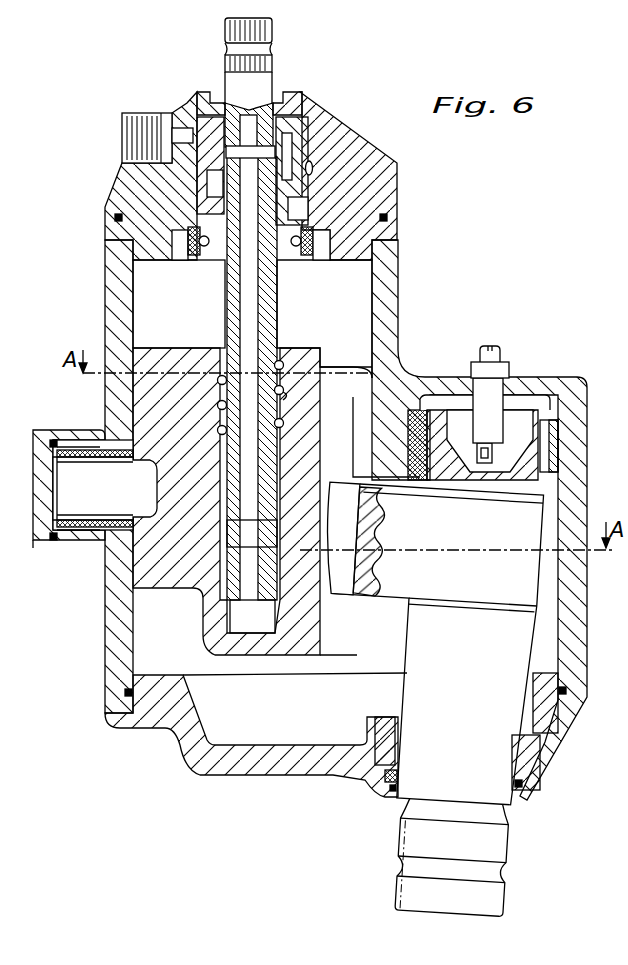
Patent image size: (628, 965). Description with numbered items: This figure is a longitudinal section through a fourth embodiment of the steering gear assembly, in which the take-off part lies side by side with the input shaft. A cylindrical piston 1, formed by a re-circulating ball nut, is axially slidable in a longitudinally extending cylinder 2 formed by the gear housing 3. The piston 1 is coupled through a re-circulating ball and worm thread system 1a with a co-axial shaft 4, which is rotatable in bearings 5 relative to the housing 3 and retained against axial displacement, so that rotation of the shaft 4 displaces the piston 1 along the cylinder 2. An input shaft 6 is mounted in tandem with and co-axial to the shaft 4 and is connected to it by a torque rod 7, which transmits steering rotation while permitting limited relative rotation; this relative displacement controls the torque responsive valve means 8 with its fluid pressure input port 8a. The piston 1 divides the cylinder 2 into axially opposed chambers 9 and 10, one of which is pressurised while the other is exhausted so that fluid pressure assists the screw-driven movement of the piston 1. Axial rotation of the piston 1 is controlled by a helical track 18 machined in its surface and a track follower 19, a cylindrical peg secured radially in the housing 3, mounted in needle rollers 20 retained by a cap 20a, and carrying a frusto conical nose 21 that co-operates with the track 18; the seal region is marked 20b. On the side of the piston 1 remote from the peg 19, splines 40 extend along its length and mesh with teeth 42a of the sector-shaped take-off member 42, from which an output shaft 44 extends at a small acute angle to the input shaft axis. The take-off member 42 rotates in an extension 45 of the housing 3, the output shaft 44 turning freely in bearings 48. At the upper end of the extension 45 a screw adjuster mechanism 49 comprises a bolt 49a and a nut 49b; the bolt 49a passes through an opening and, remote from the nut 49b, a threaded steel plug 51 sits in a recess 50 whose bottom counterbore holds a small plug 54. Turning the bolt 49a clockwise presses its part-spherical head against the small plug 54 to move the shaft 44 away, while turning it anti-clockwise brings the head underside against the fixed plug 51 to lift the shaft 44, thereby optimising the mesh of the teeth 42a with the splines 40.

The cylindrical piston 1 is at (353, 353).
The re-circulating ball and worm thread system 1a is at (287, 398).
The cylinder 2 is at (367, 285).
The gear housing 3 is at (145, 188).
The shaft 4 is at (233, 333).
The bearings 5 is at (297, 248).
The input shaft 6 is at (228, 56).
The torque rod 7 is at (258, 318).
The torque responsive valve means 8 is at (315, 166).
The fluid pressure input port 8a is at (124, 137).
The chamber 9 is at (147, 307).
The chamber 10 is at (147, 620).
The track 18 is at (147, 470).
The track follower 19 is at (72, 433).
The needle rollers 20 is at (80, 528).
The cap 20a is at (33, 547).
The seal ring 20b is at (65, 466).
The frusto conical nose 21 is at (142, 498).
The splines 40 is at (350, 395).
The take-off member 42 is at (530, 537).
The teeth 42a is at (350, 580).
The output shaft 44 is at (500, 848).
The extension 45 is at (573, 407).
The bearings 48 is at (553, 438).
The screw adjuster mechanism 49 is at (500, 350).
The bolt 49a is at (502, 362).
The nut 49b is at (473, 375).
The recess 50 is at (515, 435).
The plug 51 is at (505, 422).
The small plug 54 is at (487, 465).